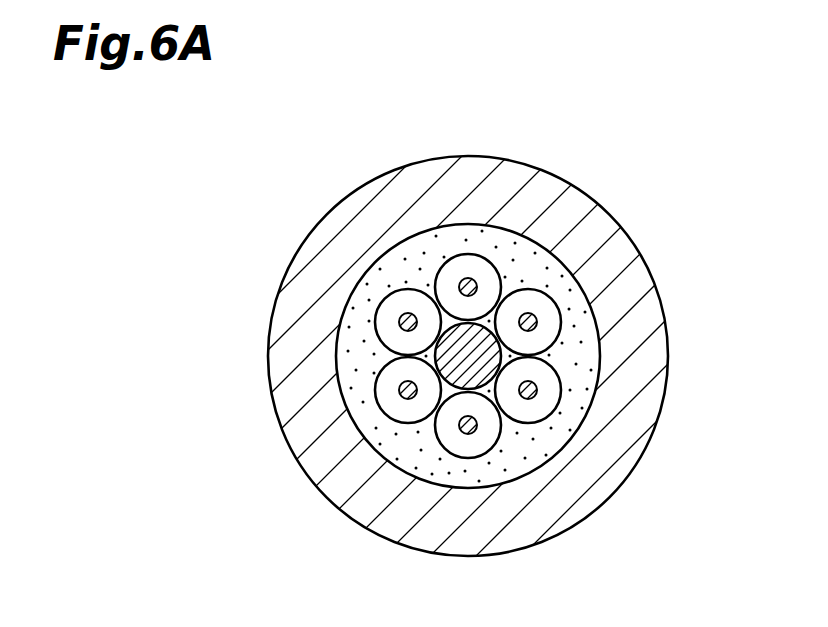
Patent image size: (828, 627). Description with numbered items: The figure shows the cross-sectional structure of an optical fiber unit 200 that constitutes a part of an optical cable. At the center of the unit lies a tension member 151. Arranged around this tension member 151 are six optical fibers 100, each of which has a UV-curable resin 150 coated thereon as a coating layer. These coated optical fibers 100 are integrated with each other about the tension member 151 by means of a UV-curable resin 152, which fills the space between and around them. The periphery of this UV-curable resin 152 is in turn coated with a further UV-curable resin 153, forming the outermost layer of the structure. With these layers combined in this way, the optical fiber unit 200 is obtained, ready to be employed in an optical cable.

The optical fiber unit 200 is at (508, 143).
The optical fibers 100 is at (477, 285).
The UV-curable resin 150 is at (550, 319).
The tension member 151 is at (453, 343).
The UV-curable resin 152 is at (591, 390).
The UV-curable resin 153 is at (580, 450).